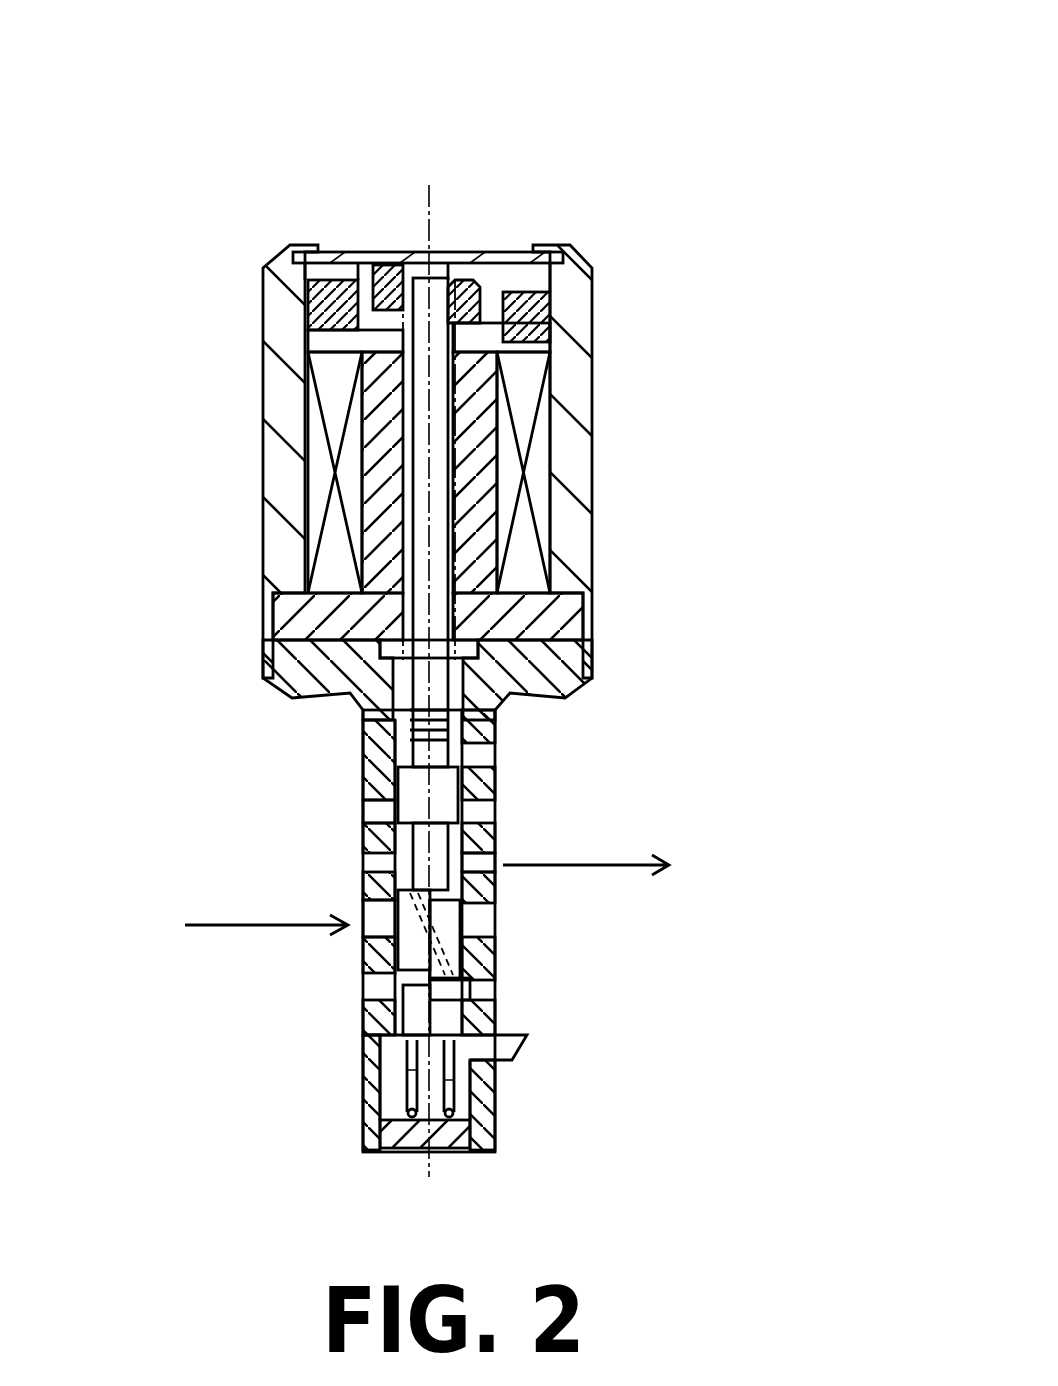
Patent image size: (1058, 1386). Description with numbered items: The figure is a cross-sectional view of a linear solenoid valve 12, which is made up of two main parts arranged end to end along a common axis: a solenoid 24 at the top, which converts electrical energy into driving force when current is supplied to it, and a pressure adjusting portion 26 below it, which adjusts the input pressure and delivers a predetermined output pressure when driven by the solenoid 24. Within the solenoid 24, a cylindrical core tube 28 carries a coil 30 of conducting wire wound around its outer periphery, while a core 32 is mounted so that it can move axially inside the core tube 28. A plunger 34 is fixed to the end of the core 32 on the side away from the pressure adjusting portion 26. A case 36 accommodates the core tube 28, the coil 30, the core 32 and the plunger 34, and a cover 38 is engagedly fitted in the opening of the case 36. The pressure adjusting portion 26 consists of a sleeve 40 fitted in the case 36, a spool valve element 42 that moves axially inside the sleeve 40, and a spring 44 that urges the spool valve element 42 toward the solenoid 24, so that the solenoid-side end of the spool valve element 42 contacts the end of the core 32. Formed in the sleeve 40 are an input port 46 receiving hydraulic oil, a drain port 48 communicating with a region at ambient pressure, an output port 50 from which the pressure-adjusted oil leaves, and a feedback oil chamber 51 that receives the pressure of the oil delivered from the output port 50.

The linear solenoid valve 12 is at (570, 110).
The solenoid 24 is at (700, 382).
The pressure adjusting portion 26 is at (570, 1073).
The core tube 28 is at (563, 622).
The coil 30 is at (540, 467).
The core 32 is at (435, 300).
The plunger 34 is at (545, 317).
The case 36 is at (273, 416).
The cover 38 is at (343, 260).
The sleeve 40 is at (363, 1037).
The spool valve element 42 is at (458, 814).
The spring 44 is at (358, 1130).
The input port 46 is at (363, 915).
The drain port 48 is at (363, 805).
The output port 50 is at (495, 858).
The feedback oil chamber 51 is at (495, 995).